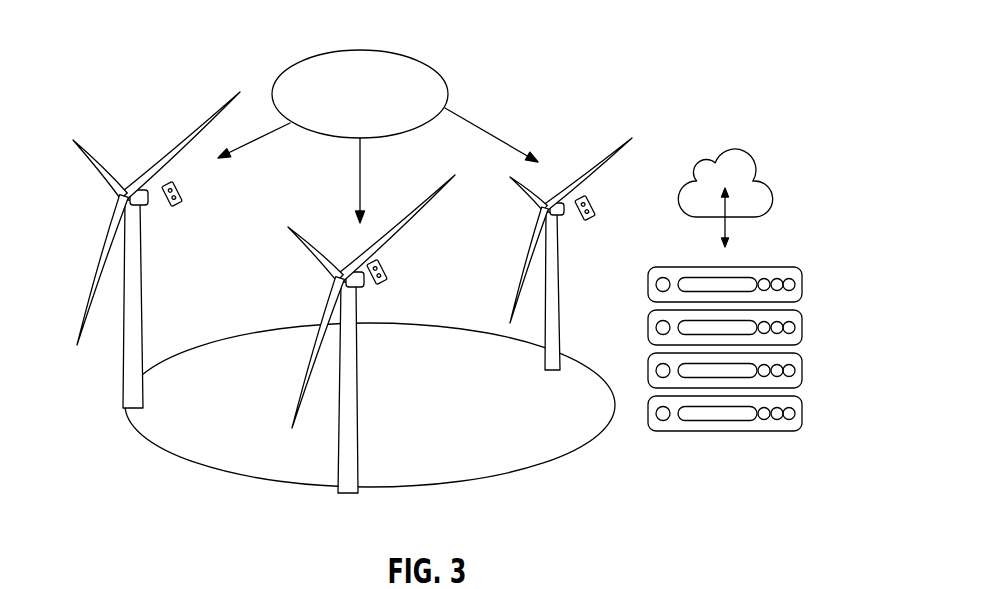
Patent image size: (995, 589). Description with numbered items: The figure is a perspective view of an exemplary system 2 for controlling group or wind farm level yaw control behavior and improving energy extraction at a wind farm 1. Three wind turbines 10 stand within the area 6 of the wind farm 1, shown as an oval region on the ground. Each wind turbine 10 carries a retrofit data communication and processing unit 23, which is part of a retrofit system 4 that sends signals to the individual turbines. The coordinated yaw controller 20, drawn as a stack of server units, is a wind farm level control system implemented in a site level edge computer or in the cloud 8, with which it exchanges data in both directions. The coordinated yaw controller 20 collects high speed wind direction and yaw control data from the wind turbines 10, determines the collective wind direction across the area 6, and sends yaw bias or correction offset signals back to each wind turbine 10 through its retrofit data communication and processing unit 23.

The wind farm 1 is at (205, 89).
The system 2 is at (820, 29).
The retrofit system 4 is at (425, 62).
The area 6 is at (183, 471).
The cloud 8 is at (735, 148).
The wind turbine 10 is at (113, 204).
The coordinated yaw controller 20 is at (788, 267).
The retrofit data communication and processing unit 23 is at (177, 206).